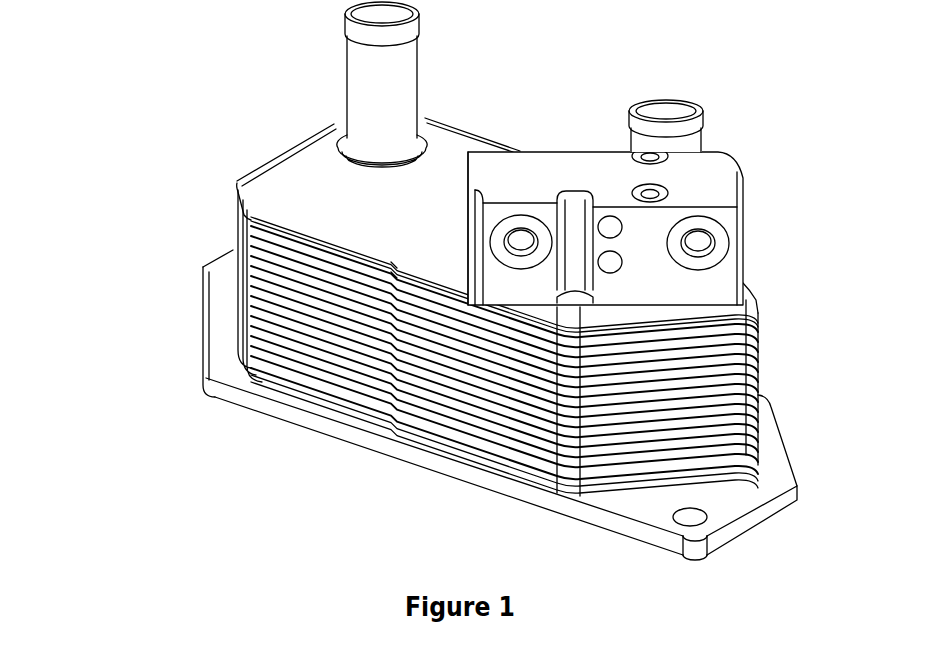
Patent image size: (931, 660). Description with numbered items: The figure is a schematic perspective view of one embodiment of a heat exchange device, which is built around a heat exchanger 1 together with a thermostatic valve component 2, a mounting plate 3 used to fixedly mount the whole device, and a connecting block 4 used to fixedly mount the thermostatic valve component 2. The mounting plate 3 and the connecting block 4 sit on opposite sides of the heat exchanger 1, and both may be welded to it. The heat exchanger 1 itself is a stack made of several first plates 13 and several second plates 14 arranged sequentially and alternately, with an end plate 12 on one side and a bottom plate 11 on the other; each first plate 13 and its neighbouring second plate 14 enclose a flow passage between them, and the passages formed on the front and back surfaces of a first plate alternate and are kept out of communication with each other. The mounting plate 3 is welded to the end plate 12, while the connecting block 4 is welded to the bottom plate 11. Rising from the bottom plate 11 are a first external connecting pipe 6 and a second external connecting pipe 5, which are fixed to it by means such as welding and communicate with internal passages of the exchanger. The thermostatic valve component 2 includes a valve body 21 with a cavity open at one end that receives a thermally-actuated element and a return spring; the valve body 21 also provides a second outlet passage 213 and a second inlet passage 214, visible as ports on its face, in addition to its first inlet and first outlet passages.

The heat exchanger 1 is at (462, 295).
The bottom plate 11 is at (307, 200).
The end plate 12 is at (303, 392).
The first plates 13 is at (566, 386).
The second plates 14 is at (391, 372).
The thermostatic valve component 2 is at (660, 180).
The valve body 21 is at (577, 167).
The second outlet passage 213 is at (518, 243).
The second inlet passage 214 is at (698, 242).
The mounting plate 3 is at (215, 350).
The connecting block 4 is at (603, 312).
The second external connecting pipe 5 is at (403, 87).
The first external connecting pipe 6 is at (655, 110).